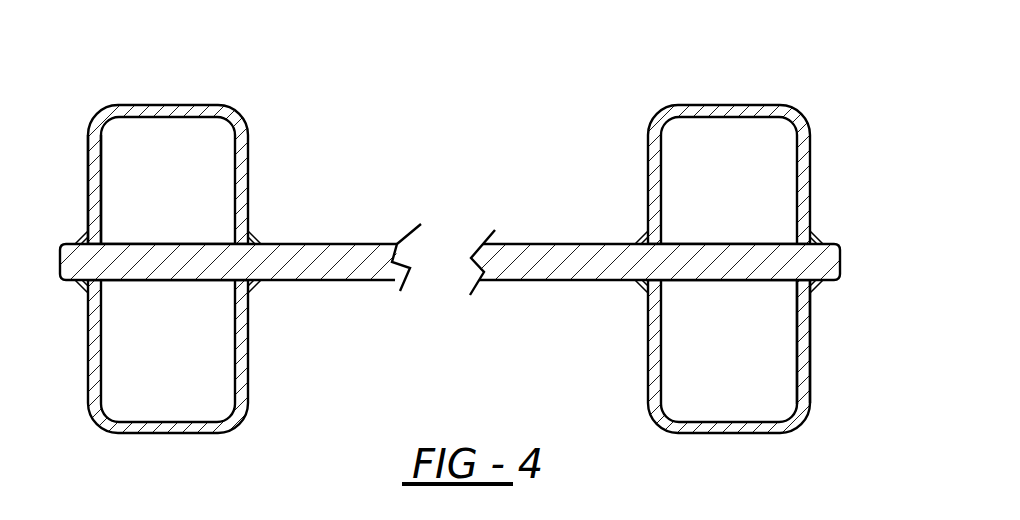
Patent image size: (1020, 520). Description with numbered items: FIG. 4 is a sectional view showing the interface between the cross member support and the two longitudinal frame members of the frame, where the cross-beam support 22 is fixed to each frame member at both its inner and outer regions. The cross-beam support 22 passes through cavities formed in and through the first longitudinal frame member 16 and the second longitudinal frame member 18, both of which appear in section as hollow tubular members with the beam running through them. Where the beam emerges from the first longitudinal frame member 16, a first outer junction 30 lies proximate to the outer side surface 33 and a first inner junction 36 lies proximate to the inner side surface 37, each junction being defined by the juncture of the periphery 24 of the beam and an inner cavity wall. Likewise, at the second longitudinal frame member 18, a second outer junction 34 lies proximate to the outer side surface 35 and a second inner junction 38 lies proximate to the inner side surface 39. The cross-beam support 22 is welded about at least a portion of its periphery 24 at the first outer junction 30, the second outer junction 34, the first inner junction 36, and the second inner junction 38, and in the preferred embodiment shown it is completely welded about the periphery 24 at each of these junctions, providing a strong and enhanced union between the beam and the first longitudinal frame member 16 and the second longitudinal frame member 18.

The first longitudinal frame member 16 is at (721, 216).
The second longitudinal frame member 18 is at (206, 229).
The cross-beam support 22 is at (554, 236).
The periphery 24 is at (337, 238).
The first outer junction 30 is at (815, 236).
The outer side surface 33 is at (819, 344).
The second outer junction 34 is at (76, 236).
The outer side surface 35 is at (80, 187).
The first inner junction 36 is at (641, 237).
The inner side surface 37 is at (640, 337).
The second inner junction 38 is at (259, 232).
The inner side surface 39 is at (258, 345).